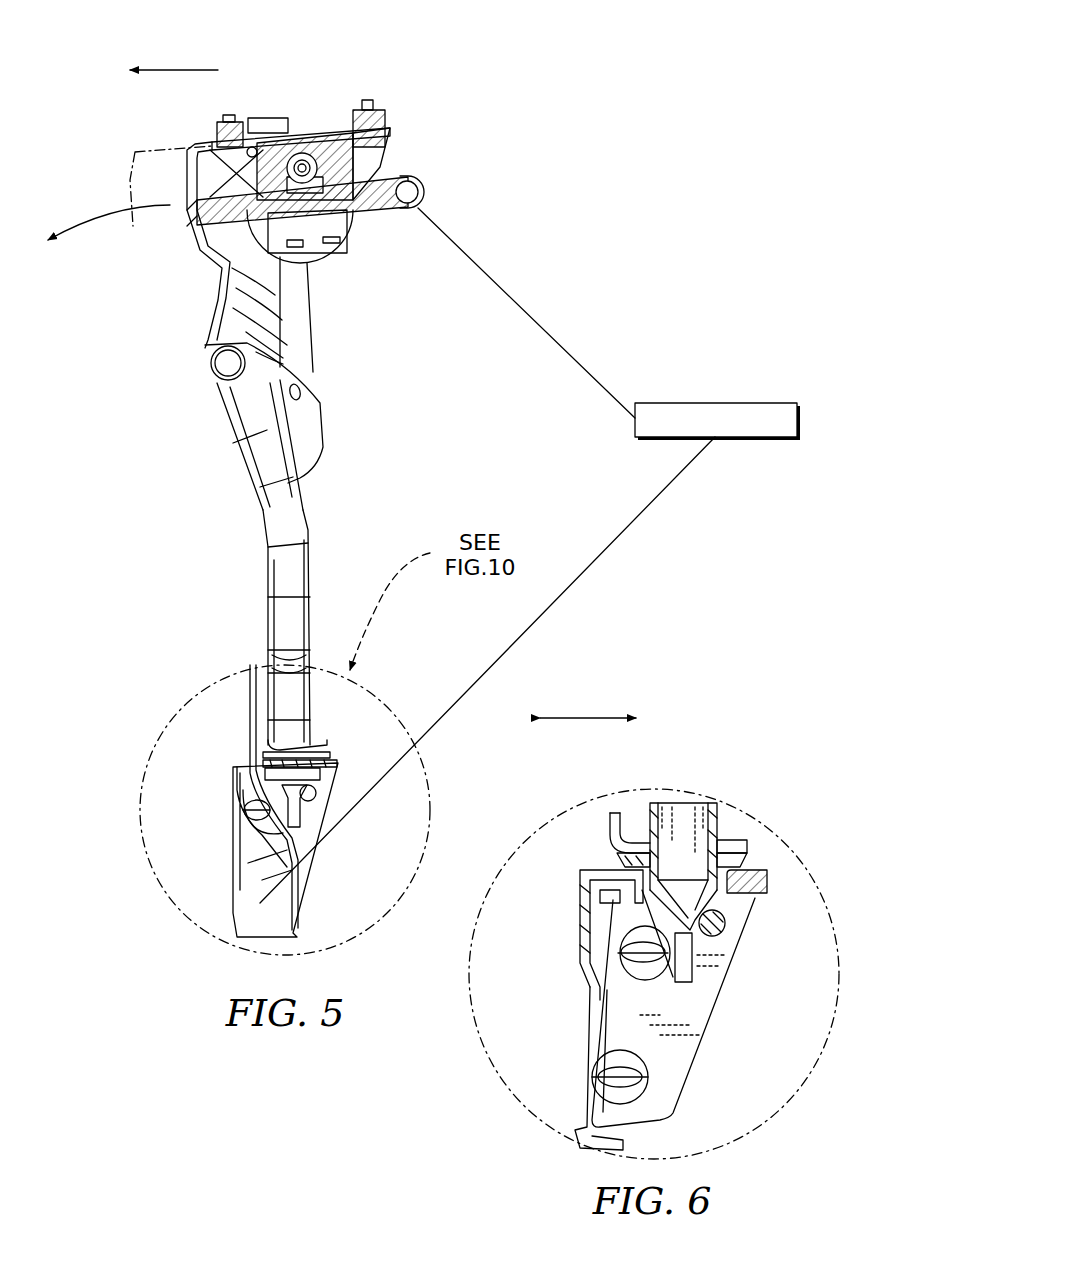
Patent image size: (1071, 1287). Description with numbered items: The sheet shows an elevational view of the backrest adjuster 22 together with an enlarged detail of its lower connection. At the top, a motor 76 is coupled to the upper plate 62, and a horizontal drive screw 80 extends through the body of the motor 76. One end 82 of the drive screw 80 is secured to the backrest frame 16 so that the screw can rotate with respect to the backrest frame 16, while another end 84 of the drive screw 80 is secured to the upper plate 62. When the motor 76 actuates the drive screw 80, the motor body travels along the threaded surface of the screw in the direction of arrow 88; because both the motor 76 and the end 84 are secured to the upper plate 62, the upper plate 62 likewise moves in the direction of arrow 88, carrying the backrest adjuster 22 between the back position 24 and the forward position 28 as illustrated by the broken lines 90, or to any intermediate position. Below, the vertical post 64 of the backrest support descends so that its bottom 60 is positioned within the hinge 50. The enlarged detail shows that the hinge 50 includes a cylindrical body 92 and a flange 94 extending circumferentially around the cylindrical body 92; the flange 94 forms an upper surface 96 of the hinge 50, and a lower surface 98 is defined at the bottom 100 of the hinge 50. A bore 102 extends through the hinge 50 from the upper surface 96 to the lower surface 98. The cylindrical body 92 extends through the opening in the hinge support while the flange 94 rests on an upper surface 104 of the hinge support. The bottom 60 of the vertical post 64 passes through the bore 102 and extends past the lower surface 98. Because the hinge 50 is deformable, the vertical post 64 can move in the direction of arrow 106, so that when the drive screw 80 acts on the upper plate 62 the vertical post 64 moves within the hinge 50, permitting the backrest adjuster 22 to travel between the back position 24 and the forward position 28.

In FIG. 5, the backrest frame 16 is at (722, 403).
In FIG. 5, the backrest adjuster 22 is at (108, 156).
In FIG. 5, the back position 24 is at (356, 90).
In FIG. 5, the forward position 28 is at (130, 224).
In FIG. 5, the hinge 50 is at (332, 740).
In FIG. 6, the hinge 50 is at (742, 864).
In FIG. 5, the bottom of the vertical post 60 is at (310, 702).
In FIG. 6, the bottom of the vertical post 60 is at (745, 935).
In FIG. 5, the upper plate 62 is at (312, 372).
In FIG. 5, the vertical post 64 is at (290, 525).
In FIG. 6, the vertical post 64 is at (708, 806).
In FIG. 5, the motor 76 is at (383, 155).
In FIG. 5, the drive screw 80 is at (375, 206).
In FIG. 5, the end of the drive screw 82 is at (424, 204).
In FIG. 5, the another end of the drive screw 84 is at (252, 145).
In FIG. 5, the arrow 88 is at (180, 70).
In FIG. 5, the broken lines 90 is at (135, 155).
In FIG. 6, the cylindrical body 92 is at (728, 910).
In FIG. 6, the flange 94 is at (746, 856).
In FIG. 6, the upper surface of the hinge 96 is at (622, 858).
In FIG. 6, the lower surface of the hinge 98 is at (640, 898).
In FIG. 6, the bottom of the hinge 100 is at (703, 910).
In FIG. 6, the bore 102 is at (687, 850).
In FIG. 6, the upper surface of the hinge support 104 is at (740, 872).
In FIG. 6, the arrow 106 is at (590, 718).